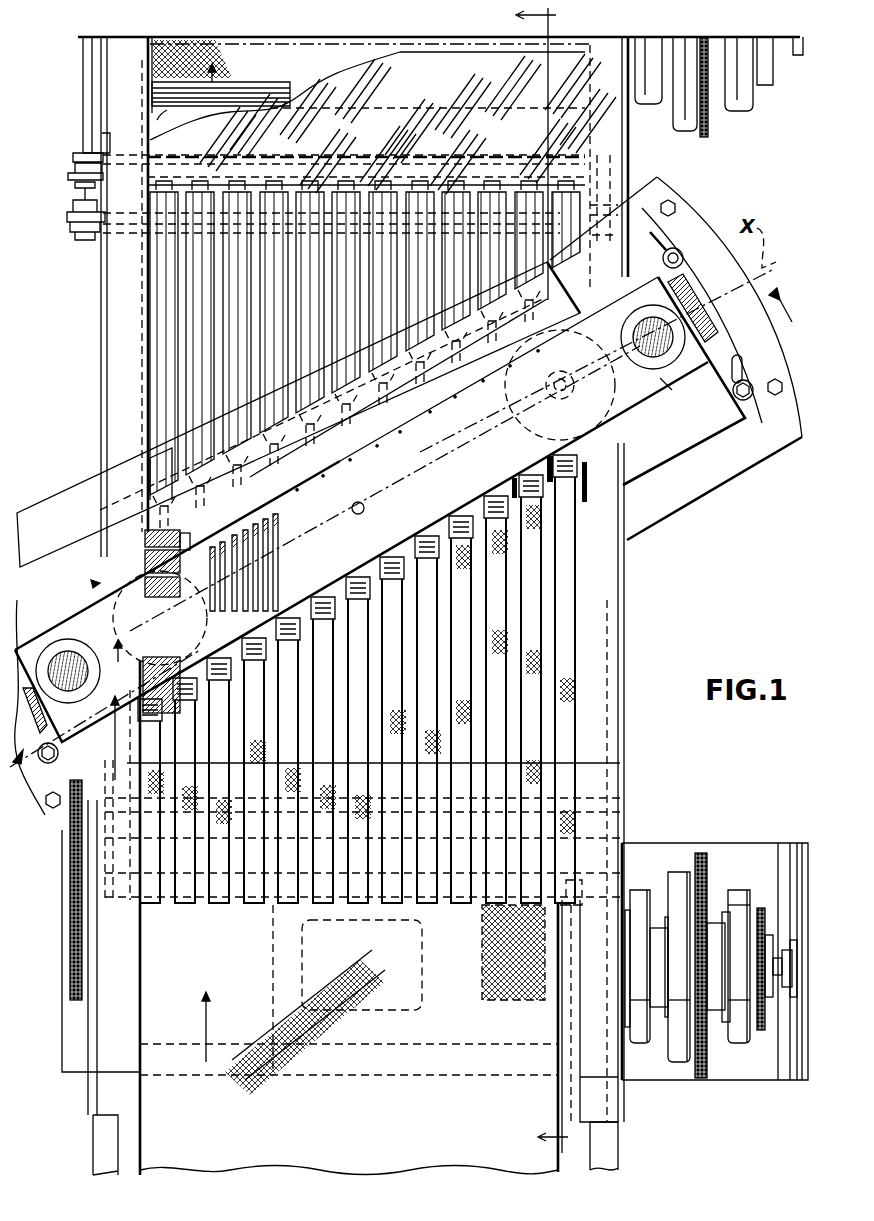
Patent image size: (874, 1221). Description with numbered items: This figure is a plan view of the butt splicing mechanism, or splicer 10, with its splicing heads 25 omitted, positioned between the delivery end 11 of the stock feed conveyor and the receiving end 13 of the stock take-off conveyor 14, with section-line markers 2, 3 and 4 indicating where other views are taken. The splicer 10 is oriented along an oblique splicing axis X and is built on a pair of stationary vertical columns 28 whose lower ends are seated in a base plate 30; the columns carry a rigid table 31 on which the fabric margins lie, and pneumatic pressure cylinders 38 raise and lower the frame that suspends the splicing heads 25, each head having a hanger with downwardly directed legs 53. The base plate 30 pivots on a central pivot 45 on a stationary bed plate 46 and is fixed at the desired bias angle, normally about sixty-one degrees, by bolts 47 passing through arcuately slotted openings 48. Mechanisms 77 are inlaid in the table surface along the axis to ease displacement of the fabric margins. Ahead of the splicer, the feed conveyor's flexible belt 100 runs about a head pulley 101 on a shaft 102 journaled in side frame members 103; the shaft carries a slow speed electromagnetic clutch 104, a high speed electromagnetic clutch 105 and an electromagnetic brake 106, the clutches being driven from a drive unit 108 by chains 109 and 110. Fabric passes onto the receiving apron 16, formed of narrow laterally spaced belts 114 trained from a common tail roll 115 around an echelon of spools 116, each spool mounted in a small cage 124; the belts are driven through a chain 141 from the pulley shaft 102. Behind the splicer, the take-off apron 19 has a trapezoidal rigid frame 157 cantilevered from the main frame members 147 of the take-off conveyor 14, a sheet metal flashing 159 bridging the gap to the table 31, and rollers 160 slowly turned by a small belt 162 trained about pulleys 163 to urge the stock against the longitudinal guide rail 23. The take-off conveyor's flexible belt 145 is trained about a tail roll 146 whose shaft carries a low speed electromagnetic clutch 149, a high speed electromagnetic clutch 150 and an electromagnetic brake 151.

The stock take-off conveyor 14 is at (262, 30).
The receiving end 13 is at (167, 110).
The tail roll 146 is at (172, 40).
The flexible belt 145 is at (388, 45).
The main frame members 147 is at (600, 48).
The longitudinal guide rail 23 is at (163, 172).
The small belt 162 is at (270, 192).
The rollers 160 is at (410, 192).
The pulleys 163 is at (80, 205).
The electromagnetic brake 151 is at (653, 104).
The high speed electromagnetic clutch 150 is at (685, 131).
The low speed electromagnetic clutch 149 is at (745, 111).
The trapezoidal rigid frame 157 is at (115, 376).
The take-off apron 19 is at (156, 470).
The sheet metal flashing 159 is at (425, 405).
The downwardly directed parallel legs 53 is at (143, 545).
The splicing heads 25 is at (100, 583).
The pneumatic pressure cylinders 38 is at (118, 640).
The section line 4- 4 is at (110, 694).
The stationary vertical columns 28 is at (68, 690).
The section line 2- 2 is at (409, 535).
The section line 3- 3 is at (550, 579).
The mechanisms 77 is at (282, 530).
The central pivot 45 is at (366, 508).
The narrow spools 116 is at (458, 506).
The small cage 124 is at (590, 458).
The butt splicing mechanism 10 is at (637, 422).
The stationary bed plate 46 is at (742, 470).
The arcuately slotted openings 48 is at (752, 358).
The bolts 47 is at (740, 395).
The base plate 30 is at (735, 420).
The rigid table 31 is at (668, 386).
The narrow flexible laterally-spaced belts 114 is at (565, 648).
The receiving apron 16 is at (588, 714).
The common tail roll 115 is at (603, 848).
The chain 110 is at (705, 853).
The chain 109 is at (763, 908).
The delivery end 11 is at (155, 920).
The chain 141 is at (70, 948).
The shaft 102 is at (160, 1002).
The drive unit 108 is at (410, 1046).
The head pulley 101 is at (305, 1030).
The flexible belt 100 is at (400, 1152).
The high speed electromagnetic clutch 105 is at (678, 1053).
The slow speed electromagnetic clutch 104 is at (738, 1042).
The electromagnetic brake 106 is at (640, 1042).
The side frame members 103 is at (612, 1115).